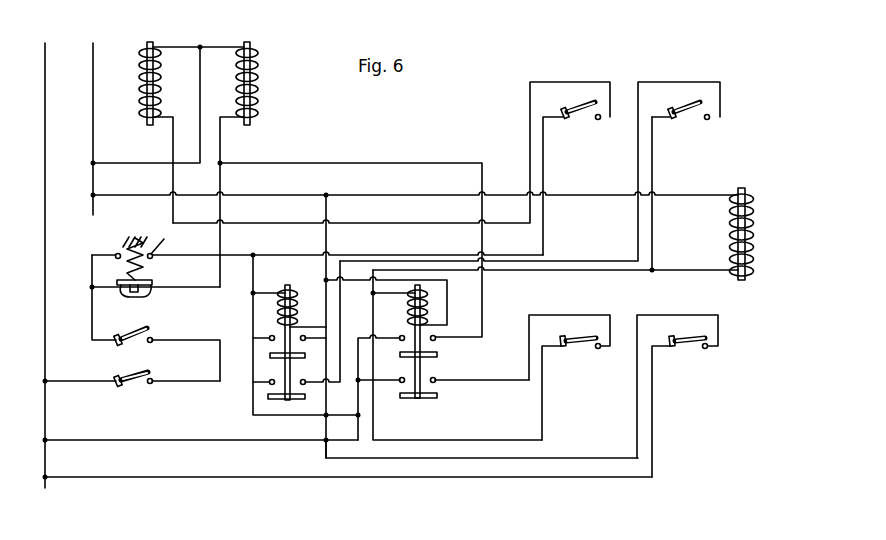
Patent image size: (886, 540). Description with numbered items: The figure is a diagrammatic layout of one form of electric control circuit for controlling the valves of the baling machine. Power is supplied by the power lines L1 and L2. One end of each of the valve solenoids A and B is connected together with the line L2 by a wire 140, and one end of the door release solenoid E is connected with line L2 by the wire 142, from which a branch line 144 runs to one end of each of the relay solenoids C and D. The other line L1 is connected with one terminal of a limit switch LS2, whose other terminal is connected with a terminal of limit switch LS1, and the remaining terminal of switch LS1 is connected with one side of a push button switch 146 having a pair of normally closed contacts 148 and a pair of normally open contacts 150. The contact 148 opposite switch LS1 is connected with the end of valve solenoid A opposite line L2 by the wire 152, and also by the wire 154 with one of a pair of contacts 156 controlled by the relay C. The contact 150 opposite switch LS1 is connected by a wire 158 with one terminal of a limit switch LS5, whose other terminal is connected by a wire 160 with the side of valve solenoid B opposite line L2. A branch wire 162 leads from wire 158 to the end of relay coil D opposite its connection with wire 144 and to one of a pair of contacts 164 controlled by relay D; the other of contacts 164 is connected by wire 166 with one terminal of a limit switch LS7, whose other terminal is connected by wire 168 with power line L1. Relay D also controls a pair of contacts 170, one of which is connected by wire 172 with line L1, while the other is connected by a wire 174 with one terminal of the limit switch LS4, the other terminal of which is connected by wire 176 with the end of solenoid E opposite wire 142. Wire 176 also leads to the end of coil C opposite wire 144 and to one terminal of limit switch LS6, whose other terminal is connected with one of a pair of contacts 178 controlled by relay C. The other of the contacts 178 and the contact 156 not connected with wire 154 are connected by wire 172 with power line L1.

The wire 140 is at (155, 163).
The wire 142 is at (414, 194).
The branch line 144 is at (329, 239).
The push button switch 146 is at (147, 243).
The normally closed contacts 148 is at (150, 286).
The normally open contacts 150 is at (118, 252).
The wire 152 is at (224, 146).
The wire 154 is at (408, 163).
The contacts 156 is at (412, 342).
The wire 158 is at (238, 255).
The wire 160 is at (530, 133).
The branch wire 162 is at (253, 306).
The contacts 164 is at (292, 344).
The wire 166 is at (522, 458).
The wire 168 is at (588, 477).
The contacts 170 is at (283, 388).
The wire 172 is at (272, 438).
The wire 174 is at (638, 233).
The wire 176 is at (652, 225).
The contacts 178 is at (394, 406).
The valve solenoid A is at (247, 70).
The valve solenoid B is at (156, 119).
The relay solenoid C is at (428, 306).
The relay solenoid D is at (298, 281).
The door release solenoid E is at (758, 252).
The power line L1 is at (56, 256).
The power line L2 is at (100, 119).
The limit switch LS1 is at (138, 323).
The limit switch LS2 is at (125, 384).
The limit switch LS4 is at (677, 120).
The limit switch LS5 is at (580, 118).
The limit switch LS6 is at (578, 340).
The limit switch LS7 is at (690, 340).